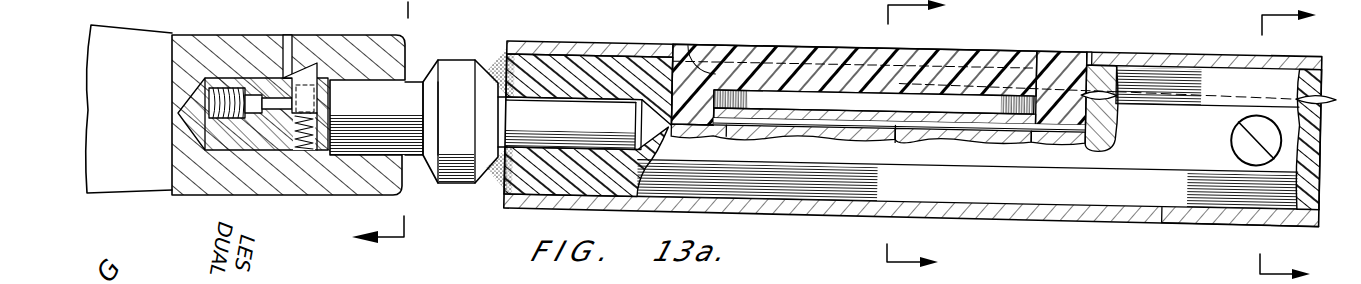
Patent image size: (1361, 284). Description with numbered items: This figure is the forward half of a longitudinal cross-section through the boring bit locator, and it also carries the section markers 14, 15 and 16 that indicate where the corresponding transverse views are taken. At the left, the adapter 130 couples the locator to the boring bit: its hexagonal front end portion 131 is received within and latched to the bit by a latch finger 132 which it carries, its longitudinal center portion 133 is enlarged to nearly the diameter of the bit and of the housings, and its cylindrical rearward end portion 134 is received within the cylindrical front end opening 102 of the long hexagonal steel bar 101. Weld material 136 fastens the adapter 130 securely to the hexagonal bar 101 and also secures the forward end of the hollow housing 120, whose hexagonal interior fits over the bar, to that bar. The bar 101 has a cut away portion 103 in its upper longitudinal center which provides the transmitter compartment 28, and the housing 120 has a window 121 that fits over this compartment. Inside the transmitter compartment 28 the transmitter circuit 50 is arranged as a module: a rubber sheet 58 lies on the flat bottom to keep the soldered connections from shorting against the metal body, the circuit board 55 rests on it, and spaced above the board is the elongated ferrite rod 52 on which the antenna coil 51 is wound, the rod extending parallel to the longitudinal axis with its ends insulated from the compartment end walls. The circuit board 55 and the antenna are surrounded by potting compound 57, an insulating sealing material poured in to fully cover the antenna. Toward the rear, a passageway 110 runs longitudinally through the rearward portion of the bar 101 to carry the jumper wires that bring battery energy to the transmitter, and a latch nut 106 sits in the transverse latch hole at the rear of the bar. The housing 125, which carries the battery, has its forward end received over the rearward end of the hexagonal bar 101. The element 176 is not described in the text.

The support wall 176 is at (129, 109).
The hexagonal front end portion 131 is at (337, 150).
The latch finger 132 is at (297, 61).
The adapter 130 is at (459, 59).
The longitudinal center portion 133 is at (453, 167).
The weld material 136 is at (506, 47).
The hexagonal steel bar 101 is at (576, 55).
The hollow housing 120 is at (624, 46).
The housing 125 is at (1187, 213).
The rearward end portion 134 is at (573, 123).
The cylindrical front end opening 102 is at (617, 151).
The potting compound 57 is at (776, 52).
The cut away portion 103 is at (703, 58).
The transmitter circuit 50 is at (942, 92).
The coil 51 is at (973, 101).
The transmitter compartment 28 is at (1002, 49).
The rubber sheet 58 is at (728, 123).
The circuit board 55 is at (897, 122).
The ferrite rod 52 is at (1029, 102).
The window 121 is at (1085, 60).
The passageway 110 is at (1150, 80).
The latch nut 106 is at (1238, 138).
The section line 14- 14 is at (396, 126).
The section line 15- 15 is at (897, 137).
The section line 16- 16 is at (1269, 144).